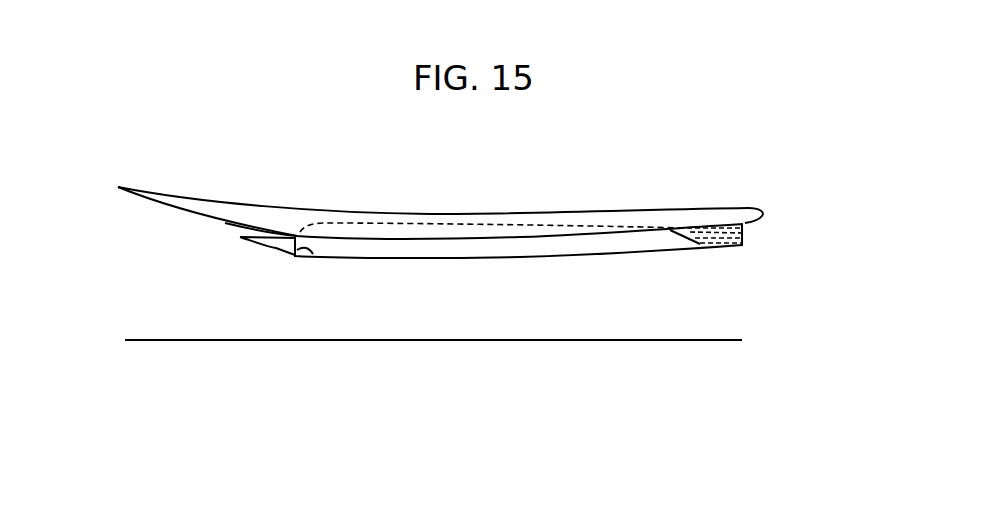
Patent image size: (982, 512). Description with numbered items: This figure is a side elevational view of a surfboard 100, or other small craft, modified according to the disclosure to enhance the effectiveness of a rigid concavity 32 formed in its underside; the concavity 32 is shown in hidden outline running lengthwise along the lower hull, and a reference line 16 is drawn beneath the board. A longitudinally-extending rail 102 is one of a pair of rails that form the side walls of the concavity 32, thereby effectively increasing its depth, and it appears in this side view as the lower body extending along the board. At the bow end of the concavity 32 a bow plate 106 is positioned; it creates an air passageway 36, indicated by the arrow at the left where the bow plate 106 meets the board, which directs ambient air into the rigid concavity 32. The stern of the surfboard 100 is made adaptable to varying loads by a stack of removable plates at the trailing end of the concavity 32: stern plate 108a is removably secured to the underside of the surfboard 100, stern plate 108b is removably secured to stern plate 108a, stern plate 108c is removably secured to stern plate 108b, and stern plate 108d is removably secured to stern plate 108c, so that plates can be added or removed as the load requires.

The surfboard 100 is at (688, 95).
The longitudinally-extending rail 102 is at (552, 258).
The bow plate 106 is at (274, 248).
The air passageway 36 is at (212, 233).
The concavity 32 is at (393, 223).
The stern plate 108a is at (745, 223).
The stern plate 108b is at (743, 228).
The stern plate 108c is at (743, 233).
The stern plate 108d is at (743, 238).
The water line 16 is at (160, 340).